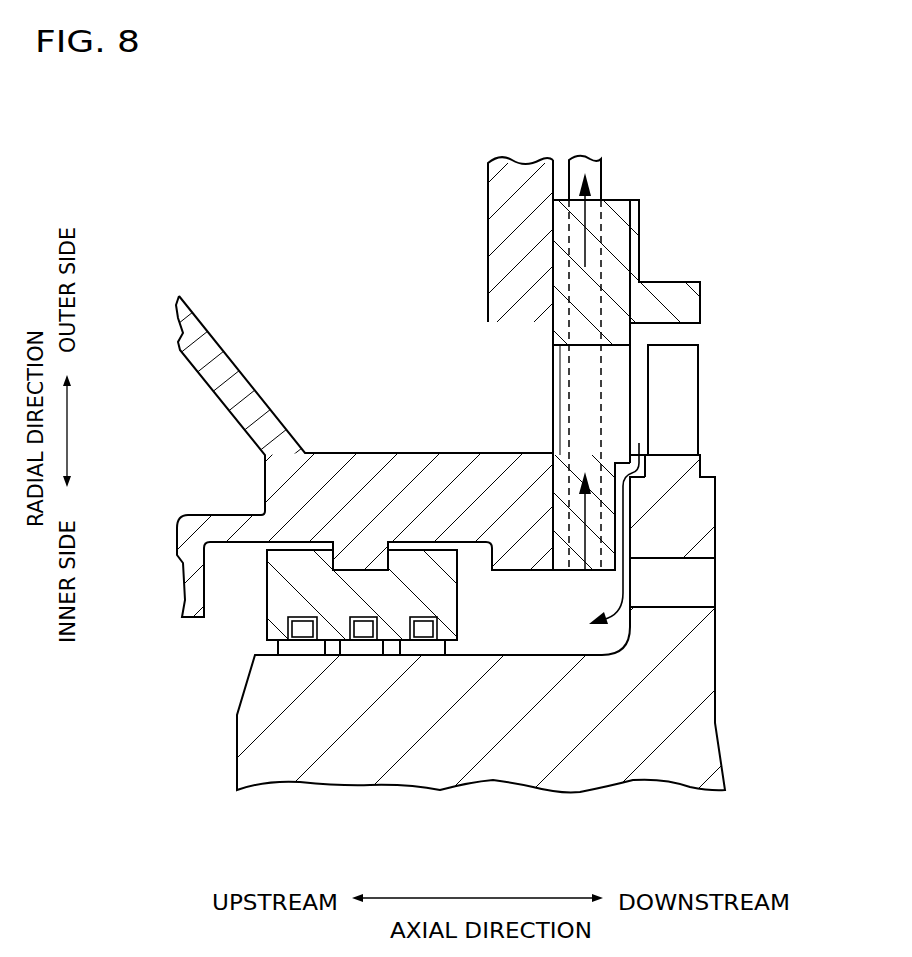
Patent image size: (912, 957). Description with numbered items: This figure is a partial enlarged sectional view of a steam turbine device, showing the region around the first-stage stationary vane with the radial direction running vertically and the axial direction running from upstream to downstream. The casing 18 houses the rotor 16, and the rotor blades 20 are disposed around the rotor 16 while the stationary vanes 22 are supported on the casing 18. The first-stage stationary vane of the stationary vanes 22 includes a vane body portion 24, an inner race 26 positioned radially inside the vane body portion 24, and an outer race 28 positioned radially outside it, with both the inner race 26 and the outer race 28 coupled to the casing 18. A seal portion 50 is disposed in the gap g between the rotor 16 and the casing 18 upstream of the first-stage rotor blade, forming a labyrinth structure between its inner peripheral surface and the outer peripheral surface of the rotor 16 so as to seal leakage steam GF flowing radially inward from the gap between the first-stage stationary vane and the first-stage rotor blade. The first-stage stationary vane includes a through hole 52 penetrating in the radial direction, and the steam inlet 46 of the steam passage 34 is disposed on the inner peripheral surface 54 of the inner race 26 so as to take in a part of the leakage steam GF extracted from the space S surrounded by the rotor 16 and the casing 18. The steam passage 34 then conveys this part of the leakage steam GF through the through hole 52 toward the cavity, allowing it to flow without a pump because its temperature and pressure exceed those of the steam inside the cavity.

The rotor 16 is at (590, 652).
The casing 18 is at (487, 242).
The rotor blades 20 is at (699, 413).
The stationary vanes 22 is at (556, 408).
The vane body portion 24 is at (553, 368).
The inner race 26 is at (557, 575).
The outer race 28 is at (640, 238).
The steam passage 34 is at (610, 182).
The steam inlet 46 is at (585, 573).
The seal portion 50 is at (468, 640).
The through hole 52 is at (600, 372).
The inner peripheral surface 54 is at (565, 573).
The gap g is at (488, 647).
The space S is at (538, 647).
The leakage steam GF is at (631, 625).